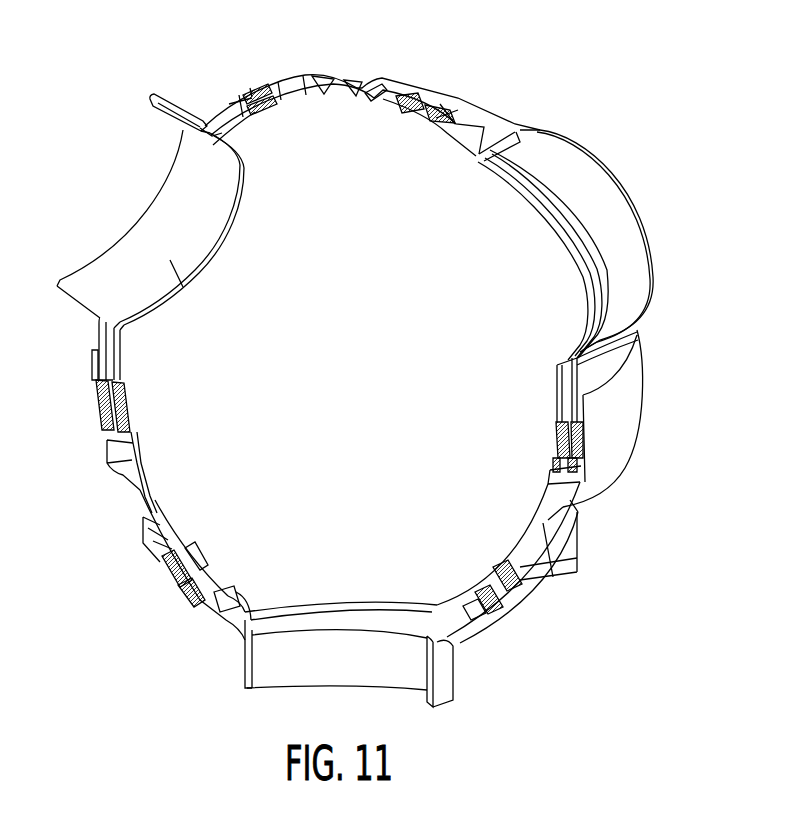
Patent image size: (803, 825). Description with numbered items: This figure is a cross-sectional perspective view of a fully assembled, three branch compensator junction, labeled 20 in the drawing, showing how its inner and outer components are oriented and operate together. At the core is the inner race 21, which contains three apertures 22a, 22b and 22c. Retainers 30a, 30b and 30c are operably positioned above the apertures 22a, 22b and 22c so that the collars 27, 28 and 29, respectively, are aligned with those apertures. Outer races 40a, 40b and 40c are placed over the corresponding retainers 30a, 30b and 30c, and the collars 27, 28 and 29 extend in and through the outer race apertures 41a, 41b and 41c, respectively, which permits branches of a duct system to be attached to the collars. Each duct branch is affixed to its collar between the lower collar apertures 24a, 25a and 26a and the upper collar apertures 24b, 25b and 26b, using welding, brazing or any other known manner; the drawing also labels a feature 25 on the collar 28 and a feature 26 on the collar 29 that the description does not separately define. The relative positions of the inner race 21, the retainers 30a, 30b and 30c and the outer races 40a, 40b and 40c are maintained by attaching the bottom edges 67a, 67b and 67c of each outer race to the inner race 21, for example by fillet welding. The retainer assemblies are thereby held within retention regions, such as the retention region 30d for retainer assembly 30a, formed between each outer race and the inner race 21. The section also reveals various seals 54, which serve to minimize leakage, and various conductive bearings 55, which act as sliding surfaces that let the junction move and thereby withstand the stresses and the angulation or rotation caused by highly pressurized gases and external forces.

The clamp band assembly 20 is at (496, 76).
The inner race 21 is at (129, 346).
The aperture 22a is at (520, 187).
The aperture 22b is at (224, 235).
The aperture 22c is at (347, 610).
The lower collar aperture 24a is at (565, 235).
The upper collar aperture 24b is at (629, 193).
The lip 25 is at (167, 97).
The lower collar aperture 25a is at (175, 265).
The upper collar aperture 25b is at (167, 183).
The end tab 26 is at (440, 710).
The lower collar aperture 26a is at (315, 620).
The upper collar aperture 26b is at (337, 688).
The collar 27 is at (557, 157).
The collar 28 is at (142, 243).
The collar 29 is at (267, 673).
The retainer 30a is at (482, 142).
The retainer 30b is at (213, 118).
The retainer 30c is at (230, 617).
The retention region 30d is at (380, 93).
The outer race 40a is at (625, 405).
The outer race 40b is at (293, 77).
The outer race 40c is at (517, 600).
The aperture 41a is at (606, 358).
The aperture 41b is at (82, 328).
The aperture 41c is at (462, 660).
The seal 54 is at (187, 557).
The conductive bearing 55 is at (263, 113).
The bottom edge 67a is at (355, 86).
The bottom edge 67b is at (327, 88).
The bottom edge 67c is at (132, 503).